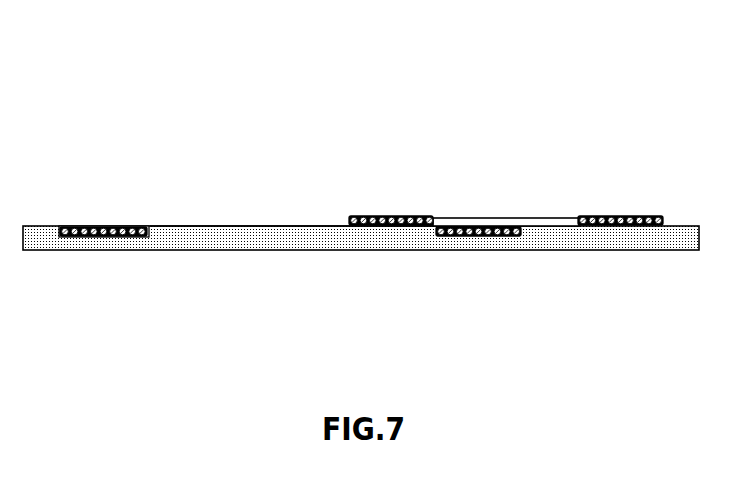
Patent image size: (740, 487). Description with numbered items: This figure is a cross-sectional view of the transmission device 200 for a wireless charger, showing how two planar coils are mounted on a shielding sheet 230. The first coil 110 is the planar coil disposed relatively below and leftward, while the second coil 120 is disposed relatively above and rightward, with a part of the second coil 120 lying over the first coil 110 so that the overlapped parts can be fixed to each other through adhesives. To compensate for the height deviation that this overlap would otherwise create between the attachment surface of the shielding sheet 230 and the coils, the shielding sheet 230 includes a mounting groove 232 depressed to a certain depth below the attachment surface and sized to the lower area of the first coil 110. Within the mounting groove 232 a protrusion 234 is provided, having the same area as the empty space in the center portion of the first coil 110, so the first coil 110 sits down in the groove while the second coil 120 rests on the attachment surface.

The transmission device 200 is at (538, 117).
The shielding sheet 230 is at (335, 252).
The mounting groove 232 is at (62, 227).
The protrusion 234 is at (218, 227).
The first coil 110 is at (105, 227).
The second coil 120 is at (393, 217).